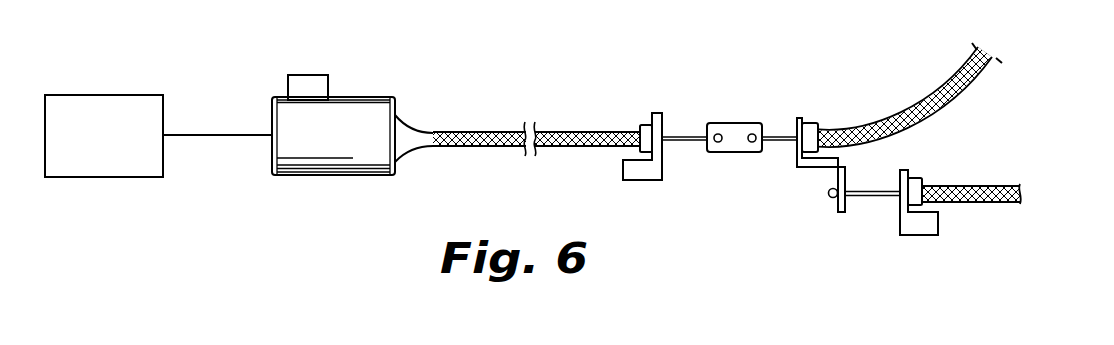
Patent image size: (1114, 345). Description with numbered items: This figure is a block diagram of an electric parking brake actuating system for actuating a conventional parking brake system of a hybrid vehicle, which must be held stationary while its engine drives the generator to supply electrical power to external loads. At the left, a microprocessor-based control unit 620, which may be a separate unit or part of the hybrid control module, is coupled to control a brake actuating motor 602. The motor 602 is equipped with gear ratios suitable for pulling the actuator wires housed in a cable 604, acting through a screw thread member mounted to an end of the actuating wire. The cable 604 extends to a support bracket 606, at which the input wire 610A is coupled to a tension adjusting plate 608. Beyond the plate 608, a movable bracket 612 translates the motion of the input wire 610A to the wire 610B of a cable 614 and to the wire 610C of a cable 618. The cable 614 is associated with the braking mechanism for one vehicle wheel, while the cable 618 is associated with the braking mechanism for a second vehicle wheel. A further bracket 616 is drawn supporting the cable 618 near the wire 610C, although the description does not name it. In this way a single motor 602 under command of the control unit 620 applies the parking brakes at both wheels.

The brake actuating motor 602 is at (357, 96).
The cable 604 is at (490, 132).
The support bracket 606 is at (620, 167).
The tension adjusting plate 608 is at (738, 122).
The input wire 610A is at (695, 135).
The wire 610B is at (776, 136).
The wire 610C is at (877, 190).
The movable bracket 612 is at (813, 168).
The cable 614 is at (947, 110).
The bracket 616 is at (898, 222).
The cable 618 is at (973, 203).
The control unit 620 is at (109, 95).